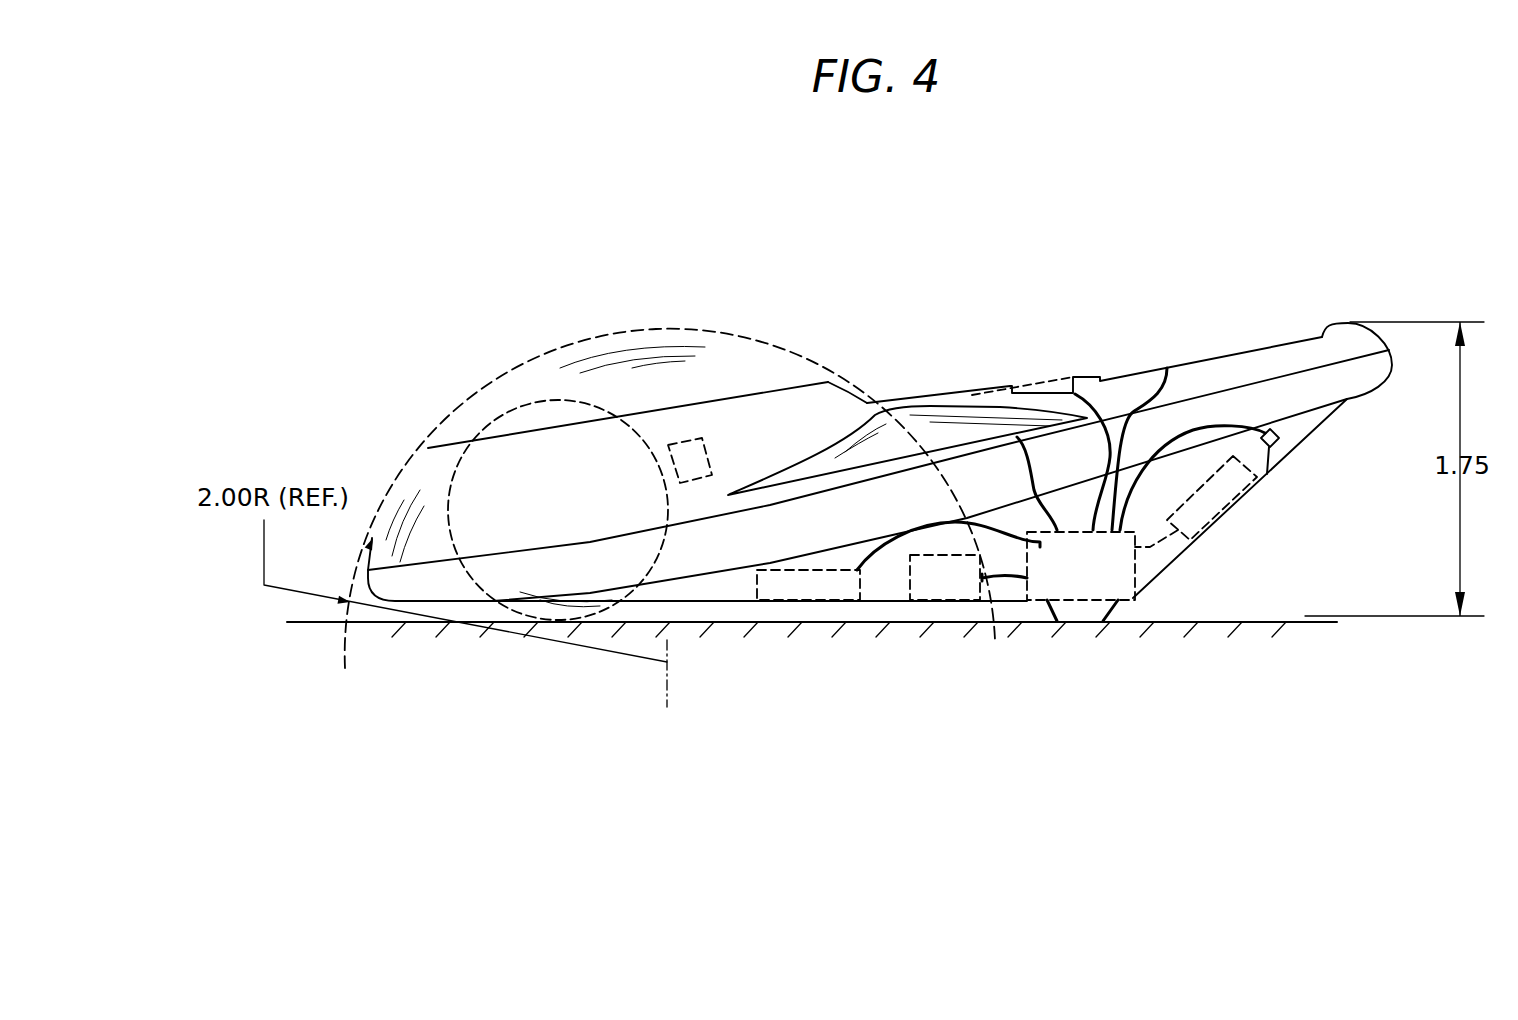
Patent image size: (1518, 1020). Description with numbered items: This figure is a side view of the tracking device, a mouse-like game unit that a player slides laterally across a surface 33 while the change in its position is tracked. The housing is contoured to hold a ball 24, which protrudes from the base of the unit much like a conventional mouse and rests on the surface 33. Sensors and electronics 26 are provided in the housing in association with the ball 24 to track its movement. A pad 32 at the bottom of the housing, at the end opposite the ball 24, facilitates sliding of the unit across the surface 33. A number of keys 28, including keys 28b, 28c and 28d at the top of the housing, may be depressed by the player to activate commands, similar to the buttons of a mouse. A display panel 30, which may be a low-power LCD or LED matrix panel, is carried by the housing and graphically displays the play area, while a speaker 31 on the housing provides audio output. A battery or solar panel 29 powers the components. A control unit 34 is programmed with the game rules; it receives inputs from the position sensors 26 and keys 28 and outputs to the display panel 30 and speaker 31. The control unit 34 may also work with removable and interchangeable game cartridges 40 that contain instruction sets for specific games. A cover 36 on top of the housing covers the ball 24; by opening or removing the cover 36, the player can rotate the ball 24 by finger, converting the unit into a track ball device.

The ball 24 is at (657, 627).
The sensors and electronics 26 is at (693, 455).
The keys 28 is at (940, 578).
The key 28b is at (913, 425).
The key 28c is at (997, 392).
The key 28d is at (1060, 388).
The battery or solar panel 29 is at (798, 583).
The display panel 30 is at (1217, 358).
The speaker 31 is at (1283, 452).
The pad 32 is at (1073, 606).
The surface 33 is at (1203, 627).
The control unit 34 is at (1103, 567).
The cover 36 is at (623, 342).
The game cartridges 40 is at (1208, 503).